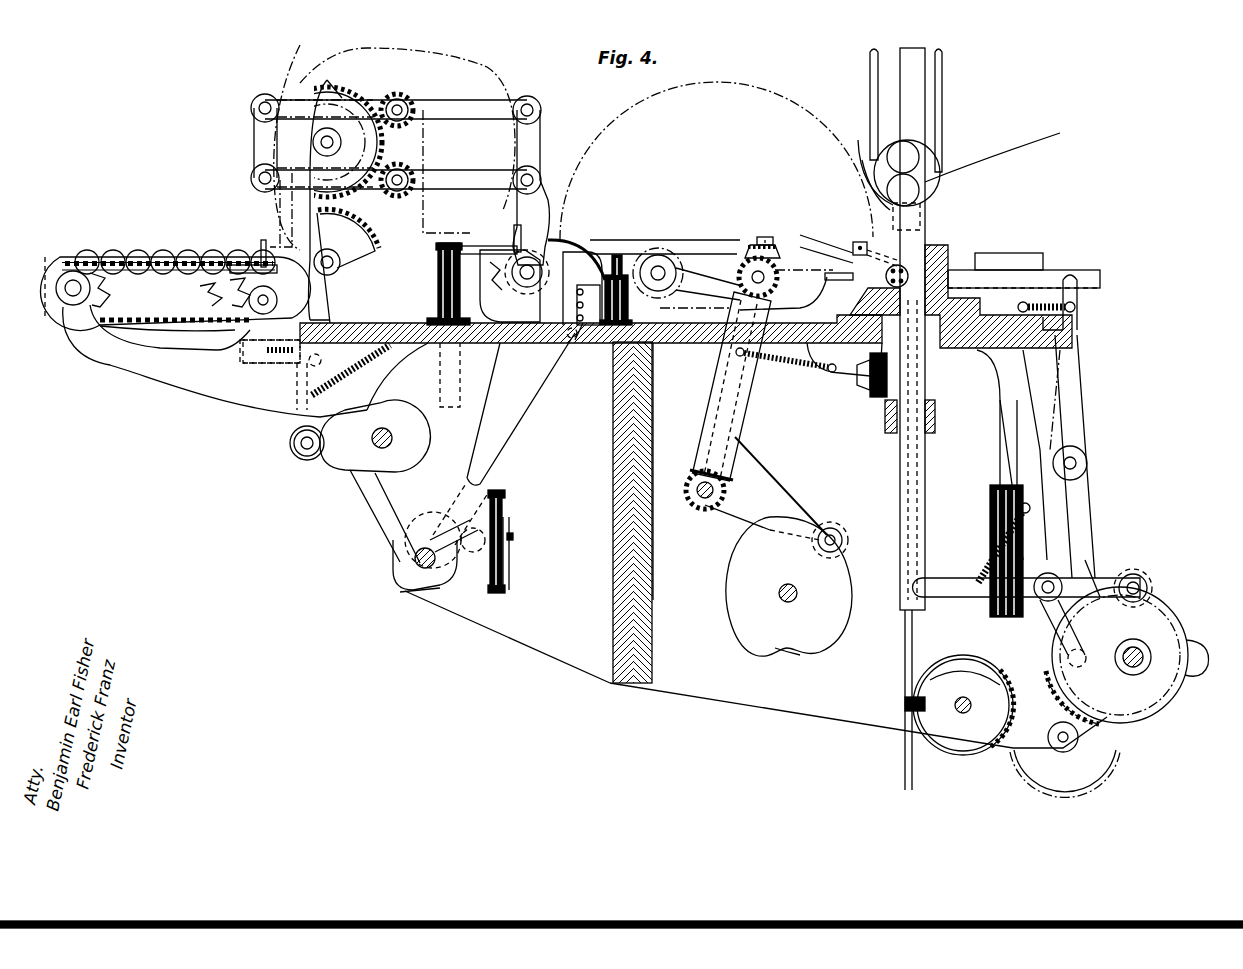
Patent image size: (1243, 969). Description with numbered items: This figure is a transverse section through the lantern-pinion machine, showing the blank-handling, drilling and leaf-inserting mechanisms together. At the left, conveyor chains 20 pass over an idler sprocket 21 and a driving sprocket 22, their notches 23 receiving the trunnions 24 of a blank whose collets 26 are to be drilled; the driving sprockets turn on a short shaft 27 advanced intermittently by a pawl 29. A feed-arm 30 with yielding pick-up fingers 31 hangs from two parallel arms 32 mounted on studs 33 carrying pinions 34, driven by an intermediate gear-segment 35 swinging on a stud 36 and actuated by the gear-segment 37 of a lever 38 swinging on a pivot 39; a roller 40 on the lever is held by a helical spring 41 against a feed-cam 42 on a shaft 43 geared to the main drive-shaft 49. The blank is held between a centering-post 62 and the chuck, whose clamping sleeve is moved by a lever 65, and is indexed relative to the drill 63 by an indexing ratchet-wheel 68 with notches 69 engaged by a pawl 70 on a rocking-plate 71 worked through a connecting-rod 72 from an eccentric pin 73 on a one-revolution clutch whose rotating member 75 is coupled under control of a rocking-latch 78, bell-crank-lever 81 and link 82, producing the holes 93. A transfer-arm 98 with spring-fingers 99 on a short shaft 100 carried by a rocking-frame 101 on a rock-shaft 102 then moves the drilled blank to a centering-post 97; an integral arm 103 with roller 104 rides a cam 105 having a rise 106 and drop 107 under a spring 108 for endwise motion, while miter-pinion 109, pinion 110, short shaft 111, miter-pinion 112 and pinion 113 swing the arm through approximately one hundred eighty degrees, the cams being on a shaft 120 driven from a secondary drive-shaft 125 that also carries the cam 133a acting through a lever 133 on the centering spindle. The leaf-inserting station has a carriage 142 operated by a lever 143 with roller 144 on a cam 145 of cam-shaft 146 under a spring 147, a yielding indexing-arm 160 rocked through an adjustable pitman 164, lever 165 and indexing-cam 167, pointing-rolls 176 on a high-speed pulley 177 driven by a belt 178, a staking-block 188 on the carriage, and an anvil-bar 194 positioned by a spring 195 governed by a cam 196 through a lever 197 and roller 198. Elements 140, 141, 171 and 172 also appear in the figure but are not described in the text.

The conveyor chains 20 is at (147, 323).
The idler sprocket 21 is at (103, 300).
The driving sprocket 22 is at (235, 303).
The notches 23 is at (160, 332).
The trunnion 24 is at (143, 257).
The collet 26 is at (90, 253).
The short shaft 27 is at (262, 310).
The pawl 29 is at (255, 363).
The feed-arm 30 is at (254, 148).
The yielding pick-up fingers 31 is at (262, 250).
The parallel arms 32 is at (283, 100).
The studs 33 is at (380, 120).
The pinions 34 is at (413, 93).
The intermediate gear-segment 35 is at (362, 88).
The stud 36 is at (313, 140).
The gear-segment 37 is at (362, 252).
The lever 38 is at (332, 308).
The pivot 39 is at (333, 270).
The roller 40 is at (297, 455).
The helical spring 41 is at (358, 382).
The feed-cam 42 is at (335, 460).
The shaft 43 is at (378, 448).
The main-drive-shaft 49 is at (420, 568).
The centering-post 62 is at (550, 343).
The drill 63 is at (520, 282).
The lever 65 is at (470, 250).
The indexing ratchet-wheel 68 is at (518, 222).
The notches 69 is at (545, 250).
The pawl 70 is at (582, 240).
The rocking-plate 71 is at (583, 347).
The connecting-rod 72 is at (507, 437).
The eccentric pin 73 is at (405, 545).
The disk-like clutch member 75 is at (425, 592).
The rocking-latch 78 is at (512, 537).
The bell-crank-lever 81 is at (503, 522).
The link 82 is at (503, 575).
The holes 93 is at (868, 262).
The centering-post 97 is at (853, 242).
The transfer-arm 98 is at (672, 243).
The spring-fingers 99 is at (628, 303).
The short shaft 100 is at (785, 270).
The rocking-frame 101 is at (737, 438).
The rock-shaft 102 is at (700, 503).
The arm 103 is at (780, 490).
The roller 104 is at (842, 535).
The cam 105 is at (835, 580).
The rise 106 is at (770, 527).
The drop 107 is at (790, 655).
The spring 108 is at (795, 367).
The miter-pinion 109 is at (777, 280).
The pinion 110 is at (748, 250).
The short shaft 111 is at (765, 240).
The miter-pinion 112 is at (697, 462).
The pinion 113 is at (693, 487).
The shaft 120 is at (785, 598).
The secondary drive-shaft 125 is at (960, 712).
The lever 133 is at (907, 645).
The cam 133a is at (935, 722).
The rollers 140 is at (928, 168).
The column 141 is at (913, 92).
The carriage 142 is at (946, 345).
The lever 143 is at (1110, 585).
The roller 144 is at (1148, 588).
The cam 145 is at (1107, 727).
The cam-shaft 146 is at (1143, 653).
The spring 147 is at (1000, 545).
The indexing-arm 160 is at (866, 150).
The adjustable pitman 164 is at (1072, 312).
The lever 165 is at (1075, 325).
The indexing-cam 167 is at (1203, 672).
The leg 171 is at (1000, 453).
The link 172 is at (1100, 588).
The pointing-rolls 176 is at (870, 165).
The high-speed pulley 177 is at (1060, 133).
The belt 178 is at (870, 70).
The staking-block 188 is at (905, 268).
The anvil-bar 194 is at (1050, 275).
The spring 195 is at (1072, 300).
The cam 196 is at (1140, 697).
The lever 197 is at (1080, 375).
The roller 198 is at (1068, 660).